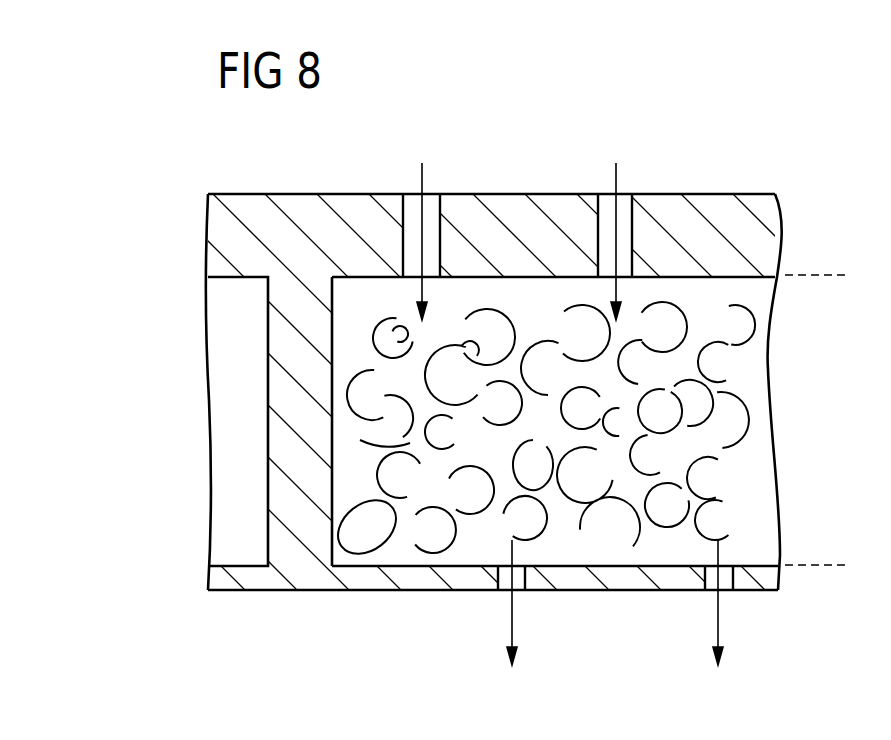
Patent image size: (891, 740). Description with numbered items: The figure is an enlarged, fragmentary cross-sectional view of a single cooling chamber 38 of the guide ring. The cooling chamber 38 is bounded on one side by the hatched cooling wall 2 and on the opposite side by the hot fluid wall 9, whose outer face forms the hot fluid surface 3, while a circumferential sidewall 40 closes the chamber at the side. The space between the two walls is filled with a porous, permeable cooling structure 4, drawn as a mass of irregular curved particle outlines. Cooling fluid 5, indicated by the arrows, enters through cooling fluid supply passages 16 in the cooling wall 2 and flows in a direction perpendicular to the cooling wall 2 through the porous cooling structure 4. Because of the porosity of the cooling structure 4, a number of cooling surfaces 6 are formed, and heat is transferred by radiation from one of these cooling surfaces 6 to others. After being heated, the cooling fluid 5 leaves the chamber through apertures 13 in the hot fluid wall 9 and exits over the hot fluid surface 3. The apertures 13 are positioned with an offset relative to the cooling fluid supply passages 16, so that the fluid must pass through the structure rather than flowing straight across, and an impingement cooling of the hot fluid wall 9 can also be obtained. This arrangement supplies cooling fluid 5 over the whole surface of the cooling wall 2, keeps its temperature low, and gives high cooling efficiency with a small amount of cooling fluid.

The cooling wall 2 is at (253, 207).
The hot fluid surface 3 is at (353, 593).
The cooling structure 4 is at (737, 333).
The cooling fluid 5 is at (617, 180).
The cooling surfaces 6 is at (740, 418).
The hot fluid wall 9 is at (383, 593).
The apertures 13 is at (500, 593).
The cooling fluid supply passages 16 is at (430, 213).
The cooling chamber 38 is at (352, 347).
The circumferential sidewall 40 is at (275, 422).